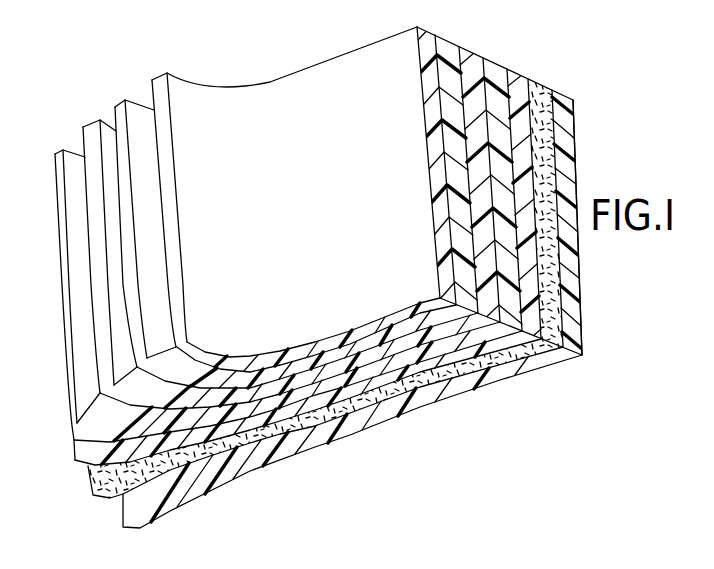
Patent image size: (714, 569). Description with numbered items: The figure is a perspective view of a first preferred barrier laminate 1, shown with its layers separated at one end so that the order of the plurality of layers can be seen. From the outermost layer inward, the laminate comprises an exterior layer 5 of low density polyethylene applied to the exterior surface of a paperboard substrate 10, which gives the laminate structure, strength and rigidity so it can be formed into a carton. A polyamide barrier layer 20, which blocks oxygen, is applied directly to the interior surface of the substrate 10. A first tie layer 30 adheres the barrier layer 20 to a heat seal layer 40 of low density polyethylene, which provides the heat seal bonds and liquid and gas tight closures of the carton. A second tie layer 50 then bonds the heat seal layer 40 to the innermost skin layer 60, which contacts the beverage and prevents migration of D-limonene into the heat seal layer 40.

The barrier laminate 1 is at (471, 31).
The exterior layer 5 is at (123, 527).
The substrate 10 is at (88, 496).
The barrier layer 20 is at (72, 463).
The first tie layer 30 is at (68, 360).
The heat seal layer 40 is at (100, 305).
The second tie layer 50 is at (128, 230).
The skin layer 60 is at (168, 167).